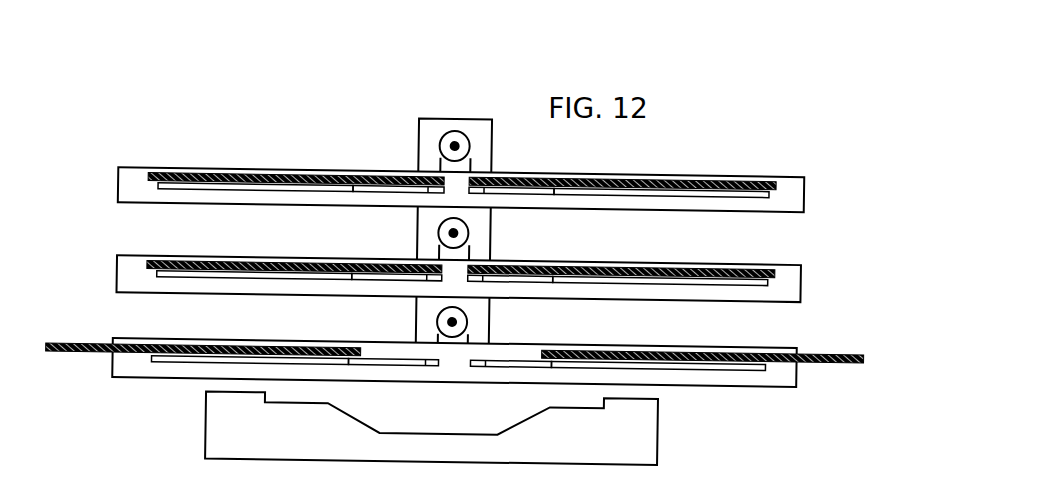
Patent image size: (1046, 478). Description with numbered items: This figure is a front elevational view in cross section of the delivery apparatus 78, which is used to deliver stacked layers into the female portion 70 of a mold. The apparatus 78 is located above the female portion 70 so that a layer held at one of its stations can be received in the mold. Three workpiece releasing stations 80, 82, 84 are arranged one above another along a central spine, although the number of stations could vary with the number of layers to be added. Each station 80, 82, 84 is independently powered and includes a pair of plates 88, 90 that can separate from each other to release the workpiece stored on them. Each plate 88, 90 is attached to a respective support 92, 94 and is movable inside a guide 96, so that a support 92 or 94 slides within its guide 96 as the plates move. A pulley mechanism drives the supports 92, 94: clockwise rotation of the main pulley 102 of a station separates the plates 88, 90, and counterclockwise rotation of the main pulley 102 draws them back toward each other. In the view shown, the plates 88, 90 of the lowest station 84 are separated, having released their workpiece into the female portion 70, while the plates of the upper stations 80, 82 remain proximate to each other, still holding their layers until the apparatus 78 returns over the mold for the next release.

The female portion of the mold 70 is at (601, 448).
The apparatus 78 is at (320, 108).
The workpiece releasing station 80 is at (710, 158).
The workpiece releasing station 82 is at (703, 260).
The workpiece releasing station 84 is at (718, 348).
The plate 88 is at (233, 175).
The plate 90 is at (585, 178).
The support 92 is at (372, 191).
The support 94 is at (548, 191).
The guide 96 is at (240, 190).
The main pulley 102 is at (453, 131).